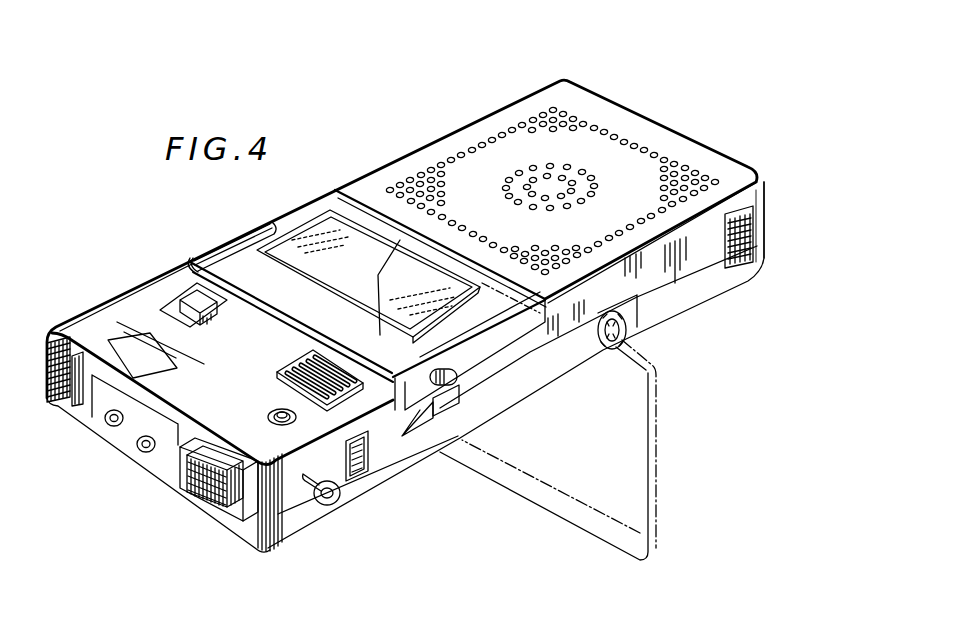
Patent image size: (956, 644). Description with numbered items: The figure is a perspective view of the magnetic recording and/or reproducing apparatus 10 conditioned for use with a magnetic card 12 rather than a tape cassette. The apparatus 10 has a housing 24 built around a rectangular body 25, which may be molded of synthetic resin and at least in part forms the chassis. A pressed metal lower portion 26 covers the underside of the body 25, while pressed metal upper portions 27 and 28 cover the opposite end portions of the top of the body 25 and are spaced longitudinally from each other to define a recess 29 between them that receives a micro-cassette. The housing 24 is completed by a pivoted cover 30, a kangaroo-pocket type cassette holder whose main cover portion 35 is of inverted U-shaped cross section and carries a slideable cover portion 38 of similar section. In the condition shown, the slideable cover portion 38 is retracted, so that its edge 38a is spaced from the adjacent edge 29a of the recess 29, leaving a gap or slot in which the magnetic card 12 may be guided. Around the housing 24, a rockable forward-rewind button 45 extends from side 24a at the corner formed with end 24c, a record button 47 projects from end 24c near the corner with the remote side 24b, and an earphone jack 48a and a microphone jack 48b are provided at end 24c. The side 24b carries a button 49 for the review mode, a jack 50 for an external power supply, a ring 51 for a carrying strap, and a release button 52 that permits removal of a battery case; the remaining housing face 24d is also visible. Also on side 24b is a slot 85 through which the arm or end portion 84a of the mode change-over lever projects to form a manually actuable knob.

The magnetic recording and/or reproducing apparatus 10 is at (563, 62).
The magnetic card 12 is at (652, 481).
The housing 24 is at (641, 106).
The side of housing 24a is at (446, 136).
The side of housing 24b is at (662, 242).
The end of housing 24c is at (98, 418).
The right end surface 24d is at (740, 152).
The rectangular body 25 is at (663, 282).
The pressed metal lower portion 26 is at (650, 320).
The pressed metal upper portion 27 is at (153, 284).
The pressed metal upper portion 28 is at (689, 138).
The recess 29 is at (246, 226).
The edge of recess 29a is at (298, 327).
The pivoted cover 30 is at (333, 182).
The main cover portion 35 is at (520, 317).
The slideable cover portion 38 is at (254, 228).
The edge of slideable cover portion 38a is at (140, 247).
The rockable forward-rewind button 45 is at (50, 367).
The record button 47 is at (216, 494).
The earphone jack 48a is at (114, 428).
The microphone jack 48b is at (146, 456).
The button 49 is at (362, 478).
The jack 50 is at (640, 352).
The ring 51 is at (326, 508).
The release button 52 is at (757, 236).
The arm or end portion of change-over lever 84a is at (416, 428).
The slot 85 is at (444, 400).